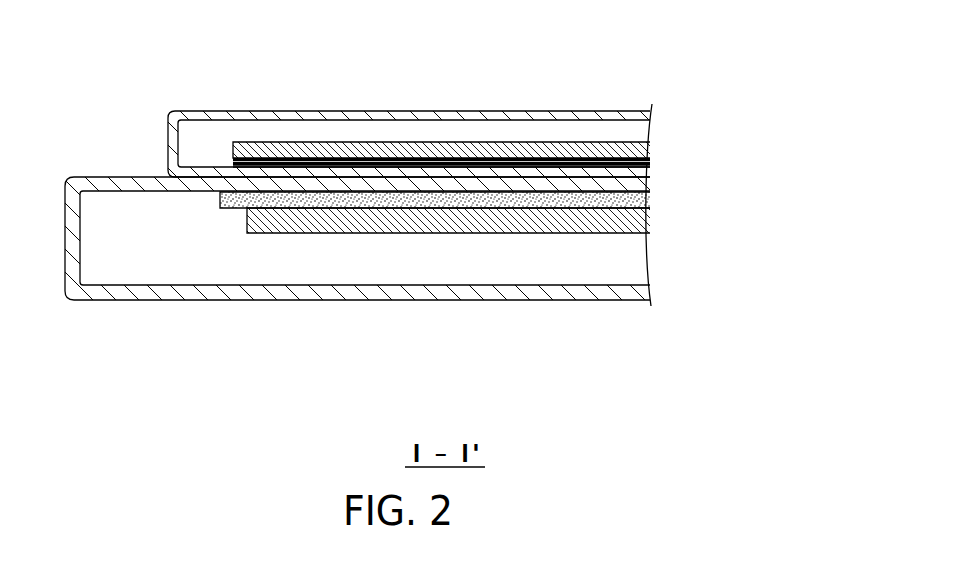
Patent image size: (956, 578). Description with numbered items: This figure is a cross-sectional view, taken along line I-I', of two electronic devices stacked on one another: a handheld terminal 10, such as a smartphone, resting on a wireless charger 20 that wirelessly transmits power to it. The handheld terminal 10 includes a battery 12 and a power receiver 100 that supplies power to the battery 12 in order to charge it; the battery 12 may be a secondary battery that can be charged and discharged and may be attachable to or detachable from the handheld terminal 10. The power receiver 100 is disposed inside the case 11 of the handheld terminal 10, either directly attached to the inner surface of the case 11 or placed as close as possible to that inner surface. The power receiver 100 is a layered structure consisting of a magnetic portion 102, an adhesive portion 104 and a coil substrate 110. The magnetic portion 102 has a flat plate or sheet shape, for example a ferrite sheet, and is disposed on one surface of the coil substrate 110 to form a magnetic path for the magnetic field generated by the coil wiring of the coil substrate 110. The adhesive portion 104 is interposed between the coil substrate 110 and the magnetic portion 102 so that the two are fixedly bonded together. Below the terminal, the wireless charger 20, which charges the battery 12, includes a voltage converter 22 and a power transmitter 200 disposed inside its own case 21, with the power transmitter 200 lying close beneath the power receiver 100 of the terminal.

The handheld terminal 10 is at (505, 105).
The case 11 is at (224, 110).
The battery 12 is at (648, 148).
The power receiver 100 is at (537, 154).
The magnetic portion 102 is at (648, 157).
The adhesive portion 104 is at (648, 162).
The coil substrate 110 is at (648, 164).
The wireless charger 20 is at (423, 294).
The case 21 is at (227, 302).
The power transmitter 200 is at (648, 198).
The voltage converter 22 is at (648, 222).